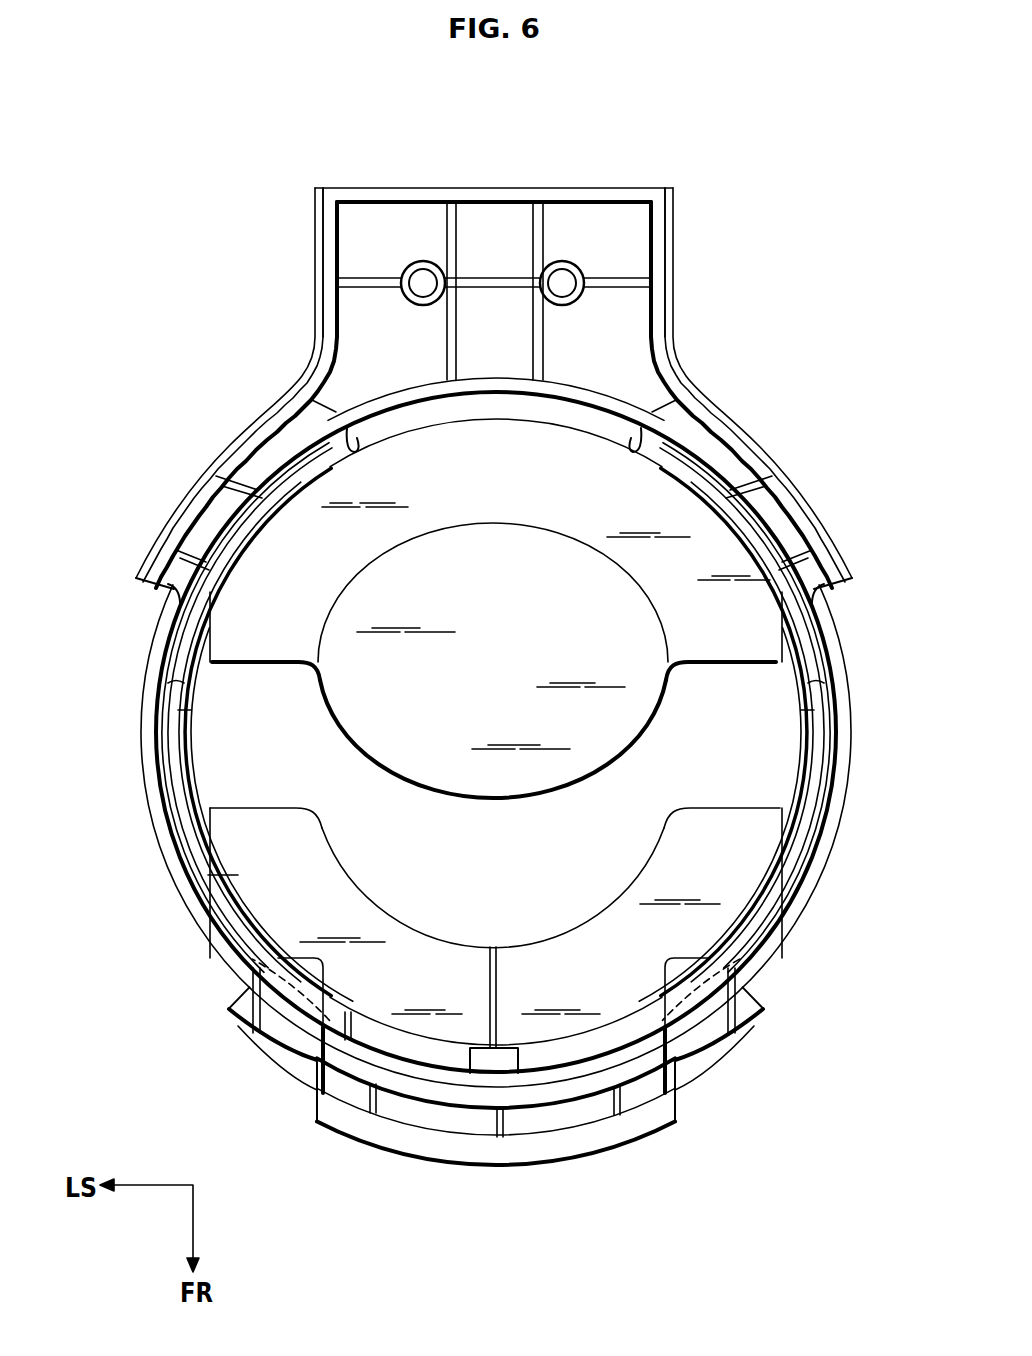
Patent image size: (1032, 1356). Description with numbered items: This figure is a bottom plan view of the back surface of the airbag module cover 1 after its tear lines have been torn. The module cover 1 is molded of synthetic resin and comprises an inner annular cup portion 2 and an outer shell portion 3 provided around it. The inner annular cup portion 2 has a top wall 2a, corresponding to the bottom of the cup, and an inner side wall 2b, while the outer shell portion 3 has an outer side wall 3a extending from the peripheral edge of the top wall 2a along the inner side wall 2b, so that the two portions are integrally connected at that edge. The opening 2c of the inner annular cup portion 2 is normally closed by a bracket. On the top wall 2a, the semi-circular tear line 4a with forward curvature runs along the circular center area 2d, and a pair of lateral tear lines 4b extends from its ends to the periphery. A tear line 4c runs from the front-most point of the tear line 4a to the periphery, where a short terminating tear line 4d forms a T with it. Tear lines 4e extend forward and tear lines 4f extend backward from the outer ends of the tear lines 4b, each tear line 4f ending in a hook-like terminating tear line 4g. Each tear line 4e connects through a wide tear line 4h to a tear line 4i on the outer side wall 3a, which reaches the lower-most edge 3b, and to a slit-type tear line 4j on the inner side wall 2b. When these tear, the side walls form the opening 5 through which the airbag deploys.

The airbag module cover 1 is at (603, 144).
The inner annular cup portion 2 is at (263, 462).
The top wall 2a is at (728, 568).
The inner side wall 2b is at (496, 708).
The opening 2c is at (176, 683).
The circular center area 2d is at (490, 548).
The outer shell portion 3 is at (744, 420).
The outer side wall 3a is at (346, 1130).
The lower-most edge 3b is at (616, 1128).
The semi-circular tear line 4a is at (352, 892).
The tear lines 4b is at (270, 666).
The tear line 4c is at (498, 960).
The short terminating tear line 4d is at (508, 1060).
The tear lines 4e is at (196, 828).
The tear lines 4f is at (220, 626).
The hook-like terminating tear line 4g is at (354, 454).
The wide tear line 4h is at (300, 970).
The tear line 4i is at (313, 1088).
The tear line 4j is at (309, 1040).
The opening 5 is at (450, 846).